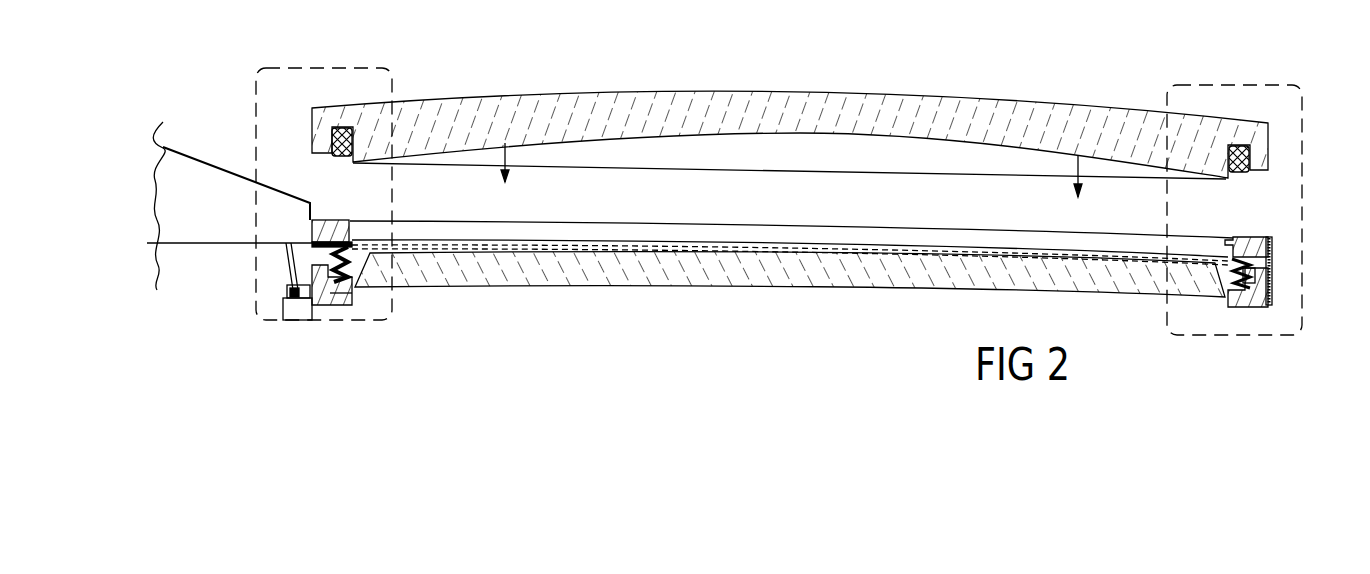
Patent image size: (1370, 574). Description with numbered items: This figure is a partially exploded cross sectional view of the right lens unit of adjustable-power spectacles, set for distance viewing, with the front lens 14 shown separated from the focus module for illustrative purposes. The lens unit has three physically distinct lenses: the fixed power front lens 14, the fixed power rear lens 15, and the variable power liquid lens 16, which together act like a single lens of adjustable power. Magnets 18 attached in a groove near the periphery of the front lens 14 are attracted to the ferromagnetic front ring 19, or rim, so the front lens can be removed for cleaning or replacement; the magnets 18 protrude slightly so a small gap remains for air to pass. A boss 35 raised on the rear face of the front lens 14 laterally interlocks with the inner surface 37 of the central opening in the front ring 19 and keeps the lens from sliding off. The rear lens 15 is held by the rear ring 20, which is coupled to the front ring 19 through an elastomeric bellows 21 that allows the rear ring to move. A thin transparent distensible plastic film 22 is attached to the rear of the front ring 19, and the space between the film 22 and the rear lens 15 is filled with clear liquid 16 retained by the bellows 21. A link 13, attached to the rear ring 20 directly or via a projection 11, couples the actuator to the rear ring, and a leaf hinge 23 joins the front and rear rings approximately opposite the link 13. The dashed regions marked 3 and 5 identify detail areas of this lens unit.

The front lens 14 is at (703, 92).
The rear lens 15 is at (683, 284).
The variable power liquid lens 16 is at (450, 246).
The distensible plastic film 22 is at (513, 238).
The magnets 18 is at (340, 159).
The inner surface 37 is at (350, 221).
The boss 35 is at (833, 172).
The front ring 19 is at (312, 231).
The projection 11 is at (287, 300).
The link 13 is at (287, 270).
The rear ring 20 is at (310, 307).
The elastomeric bellows 21 is at (358, 265).
The leaf hinge 23 is at (1268, 243).
The detail region of FIG. 3 is at (313, 323).
The detail region of FIG. 5 is at (1224, 338).